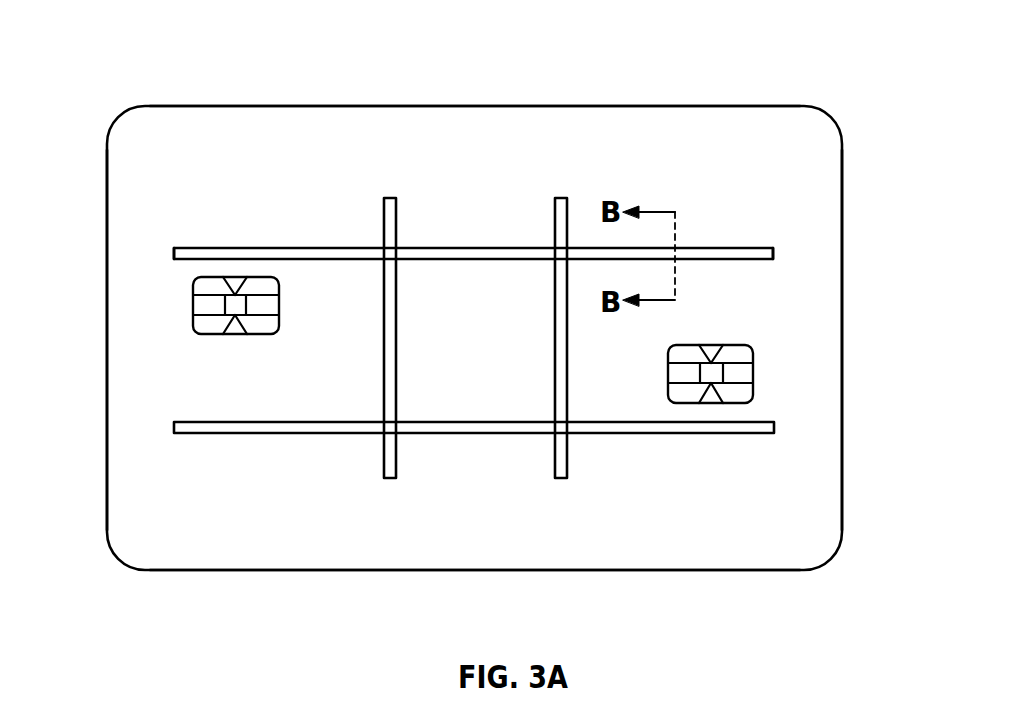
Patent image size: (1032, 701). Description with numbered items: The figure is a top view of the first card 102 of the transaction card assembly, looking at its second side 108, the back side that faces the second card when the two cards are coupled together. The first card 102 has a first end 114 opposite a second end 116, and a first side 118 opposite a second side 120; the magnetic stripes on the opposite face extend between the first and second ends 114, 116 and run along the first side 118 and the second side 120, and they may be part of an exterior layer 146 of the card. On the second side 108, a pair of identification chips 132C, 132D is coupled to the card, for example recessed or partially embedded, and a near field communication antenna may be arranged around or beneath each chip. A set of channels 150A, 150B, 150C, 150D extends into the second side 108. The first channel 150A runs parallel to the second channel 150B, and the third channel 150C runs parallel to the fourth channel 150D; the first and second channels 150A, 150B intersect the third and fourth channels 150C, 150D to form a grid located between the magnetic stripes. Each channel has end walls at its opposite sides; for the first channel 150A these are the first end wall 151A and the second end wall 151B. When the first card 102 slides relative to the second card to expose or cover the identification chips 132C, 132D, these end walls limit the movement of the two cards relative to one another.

The first card 102 is at (653, 84).
The second side 108 is at (805, 197).
The first end 114 is at (107, 293).
The second end 116 is at (842, 382).
The first side 118 is at (508, 105).
The second side 120 is at (742, 570).
The identification chip 132C is at (193, 308).
The identification chip 132D is at (753, 372).
The exterior layer 146 is at (225, 504).
The first channel 150A is at (322, 248).
The second channel 150B is at (345, 433).
The third channel 150C is at (396, 303).
The fourth channel 150D is at (555, 383).
The first end wall 151A is at (199, 248).
The second end wall 151B is at (758, 247).